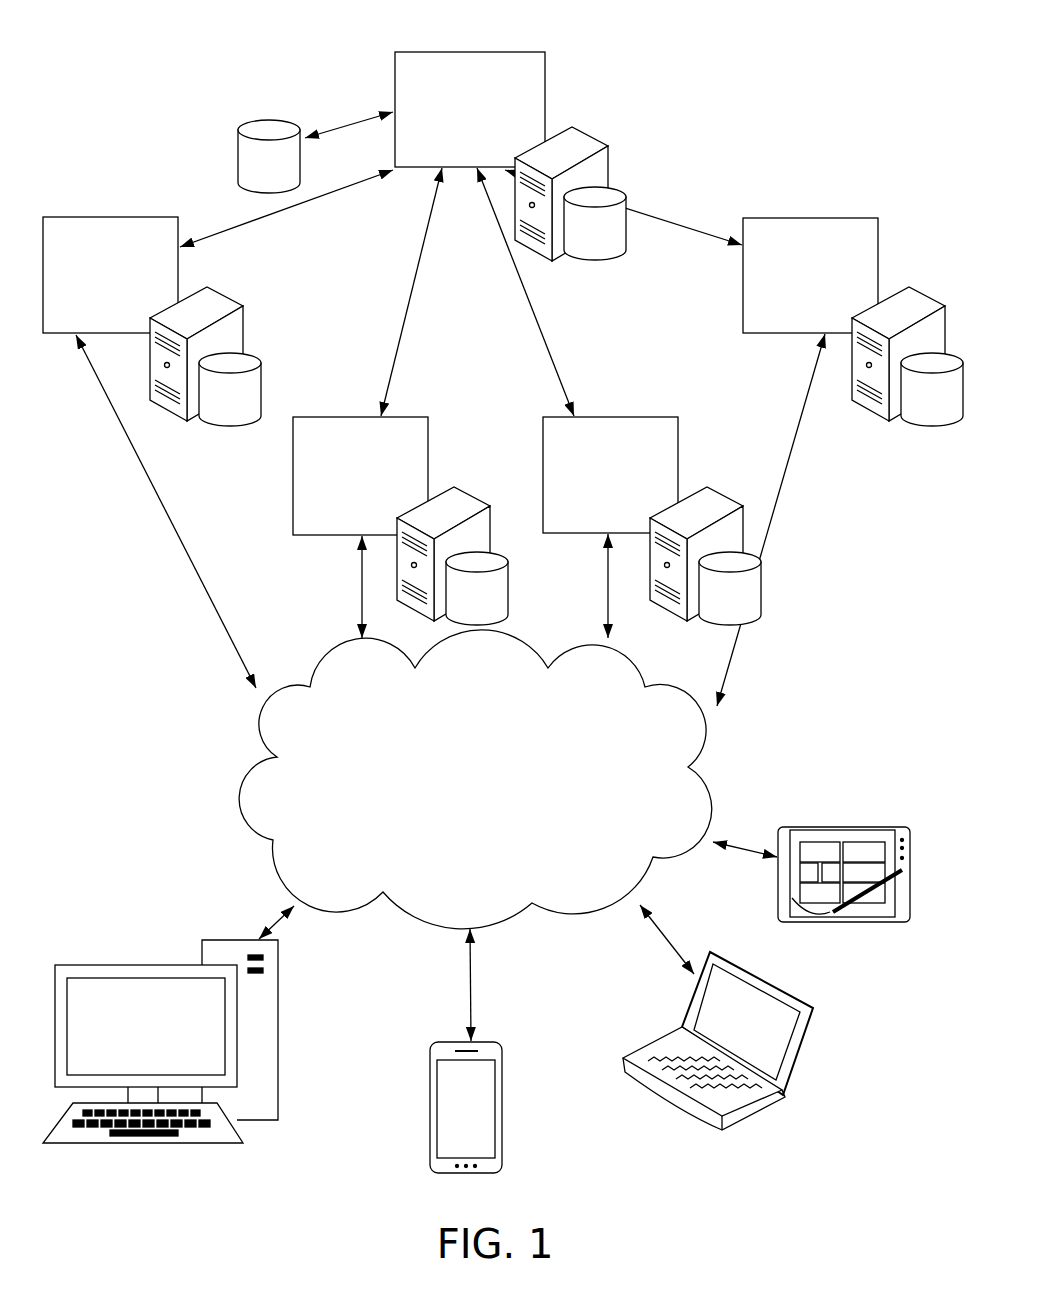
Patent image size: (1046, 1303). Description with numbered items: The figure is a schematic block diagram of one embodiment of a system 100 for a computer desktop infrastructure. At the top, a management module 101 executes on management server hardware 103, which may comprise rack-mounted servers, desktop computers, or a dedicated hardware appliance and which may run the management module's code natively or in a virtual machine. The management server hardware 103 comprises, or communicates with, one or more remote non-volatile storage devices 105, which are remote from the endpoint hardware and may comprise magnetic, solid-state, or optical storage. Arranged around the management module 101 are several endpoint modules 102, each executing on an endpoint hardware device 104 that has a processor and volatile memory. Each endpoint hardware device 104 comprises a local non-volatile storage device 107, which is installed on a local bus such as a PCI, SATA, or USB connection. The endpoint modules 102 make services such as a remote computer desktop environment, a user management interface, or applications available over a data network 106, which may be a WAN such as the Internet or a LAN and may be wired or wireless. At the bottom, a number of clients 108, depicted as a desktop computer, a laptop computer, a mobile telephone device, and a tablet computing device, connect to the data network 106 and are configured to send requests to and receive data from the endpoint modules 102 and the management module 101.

The system 100 is at (124, 55).
The management module 101 is at (452, 146).
The endpoint module 102 is at (92, 313).
The management server hardware 103 is at (590, 138).
The endpoint hardware device 104 is at (226, 304).
The remote non-volatile storage device 105 is at (275, 127).
The data network 106 is at (459, 801).
The local non-volatile storage device 107 is at (249, 363).
The client 108 is at (202, 940).